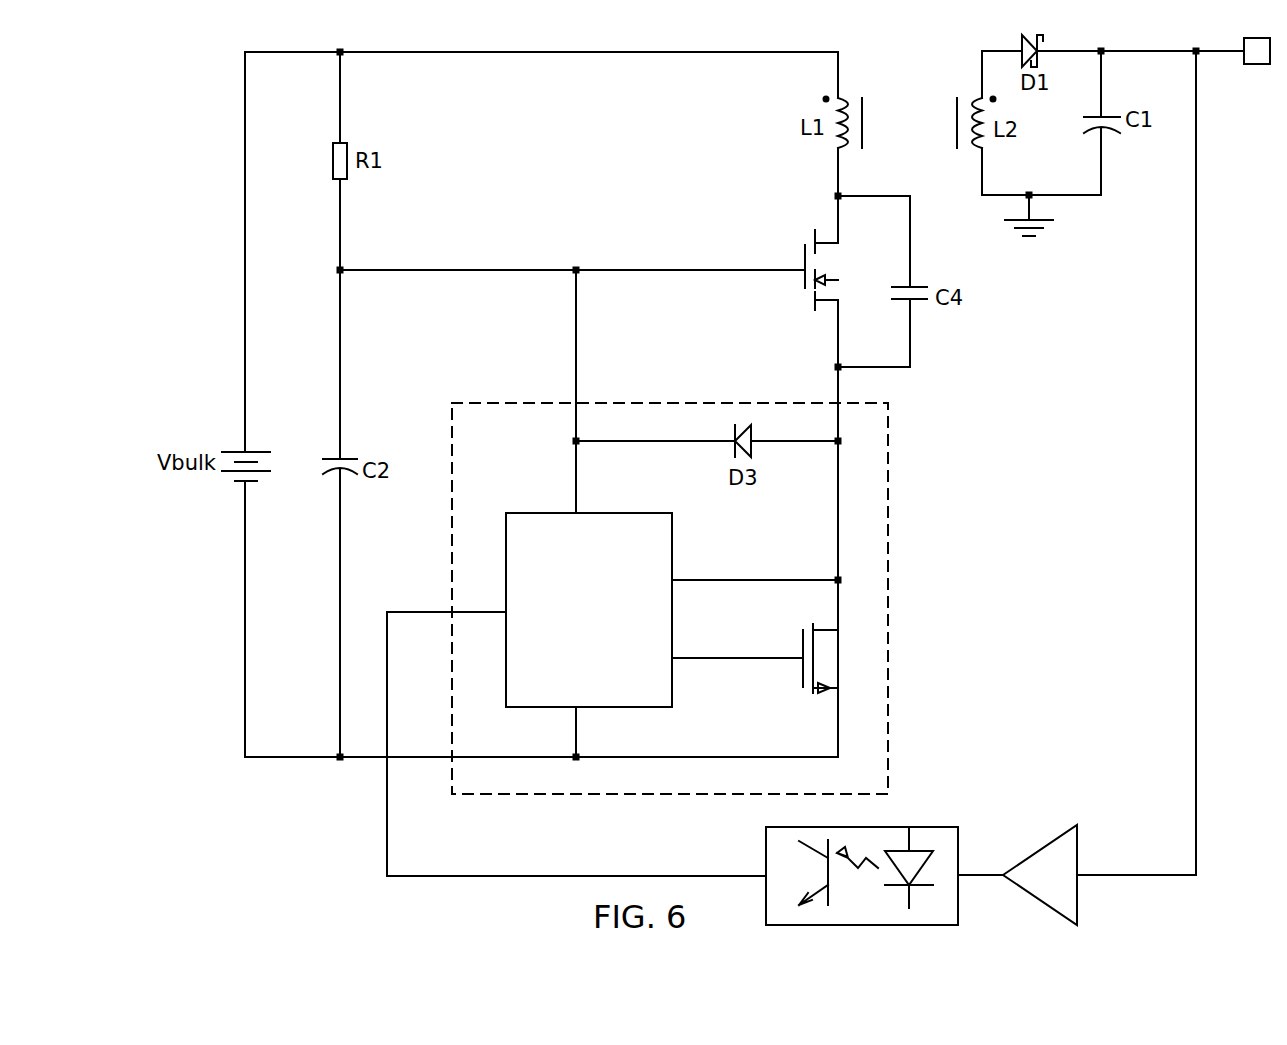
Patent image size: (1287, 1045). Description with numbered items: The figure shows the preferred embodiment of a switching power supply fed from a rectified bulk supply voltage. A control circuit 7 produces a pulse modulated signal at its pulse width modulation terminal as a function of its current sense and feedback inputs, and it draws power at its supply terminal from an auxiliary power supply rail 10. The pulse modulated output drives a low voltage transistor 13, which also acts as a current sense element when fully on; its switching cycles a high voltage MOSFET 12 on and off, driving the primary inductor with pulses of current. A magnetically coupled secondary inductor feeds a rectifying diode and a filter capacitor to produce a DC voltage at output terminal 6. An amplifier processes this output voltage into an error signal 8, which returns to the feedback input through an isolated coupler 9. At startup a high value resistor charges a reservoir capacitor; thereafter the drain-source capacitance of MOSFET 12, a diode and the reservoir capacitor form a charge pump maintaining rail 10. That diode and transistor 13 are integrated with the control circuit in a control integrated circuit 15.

The output terminal 6 is at (1257, 64).
The control circuit 7 is at (521, 513).
The error signal 8 is at (988, 876).
The isolated coupler 9 is at (903, 827).
The auxiliary power supply rail 10 is at (481, 270).
The high voltage MOSFET 12 is at (803, 248).
The low voltage transistor 13 is at (801, 643).
The control integrated circuit 15 is at (888, 489).